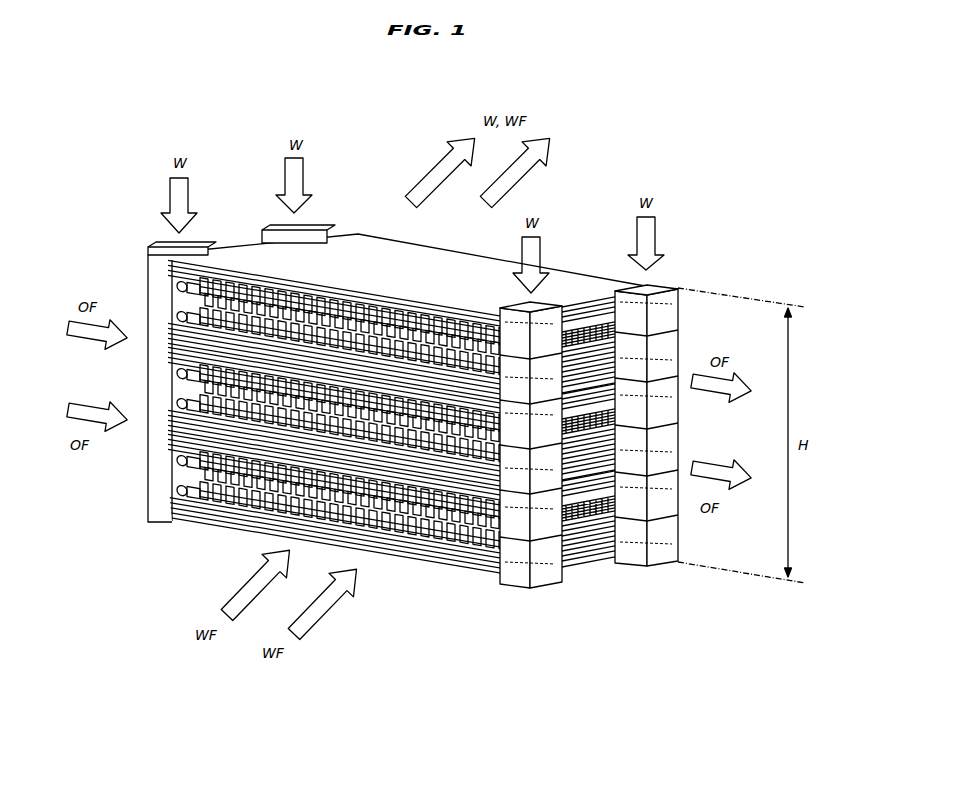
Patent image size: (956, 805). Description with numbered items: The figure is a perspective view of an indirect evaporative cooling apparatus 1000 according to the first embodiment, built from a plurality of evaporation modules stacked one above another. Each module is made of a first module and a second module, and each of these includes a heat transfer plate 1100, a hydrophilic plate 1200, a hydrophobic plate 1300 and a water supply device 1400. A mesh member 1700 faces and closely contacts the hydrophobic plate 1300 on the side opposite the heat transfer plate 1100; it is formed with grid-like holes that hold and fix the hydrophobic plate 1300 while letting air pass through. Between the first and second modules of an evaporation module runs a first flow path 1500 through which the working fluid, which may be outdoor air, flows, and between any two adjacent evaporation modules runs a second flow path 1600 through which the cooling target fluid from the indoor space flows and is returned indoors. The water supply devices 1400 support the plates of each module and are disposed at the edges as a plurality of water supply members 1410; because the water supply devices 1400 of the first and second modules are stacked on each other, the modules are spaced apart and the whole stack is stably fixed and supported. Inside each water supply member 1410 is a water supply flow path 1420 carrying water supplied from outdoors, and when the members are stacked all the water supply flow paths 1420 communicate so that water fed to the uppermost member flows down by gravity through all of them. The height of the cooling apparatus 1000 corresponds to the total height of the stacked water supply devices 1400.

The indirect evaporative cooling apparatus 1000 is at (143, 125).
The heat transfer plate 1100 is at (172, 318).
The hydrophilic plate 1200 is at (345, 335).
The hydrophobic plate 1300 is at (420, 333).
The water supply device 1400 is at (433, 389).
The water supply member 1410 is at (262, 232).
The water supply flow path 1420 is at (172, 247).
The first flow path 1500 is at (365, 555).
The second flow path 1600 is at (170, 410).
The mesh member 1700 is at (467, 330).